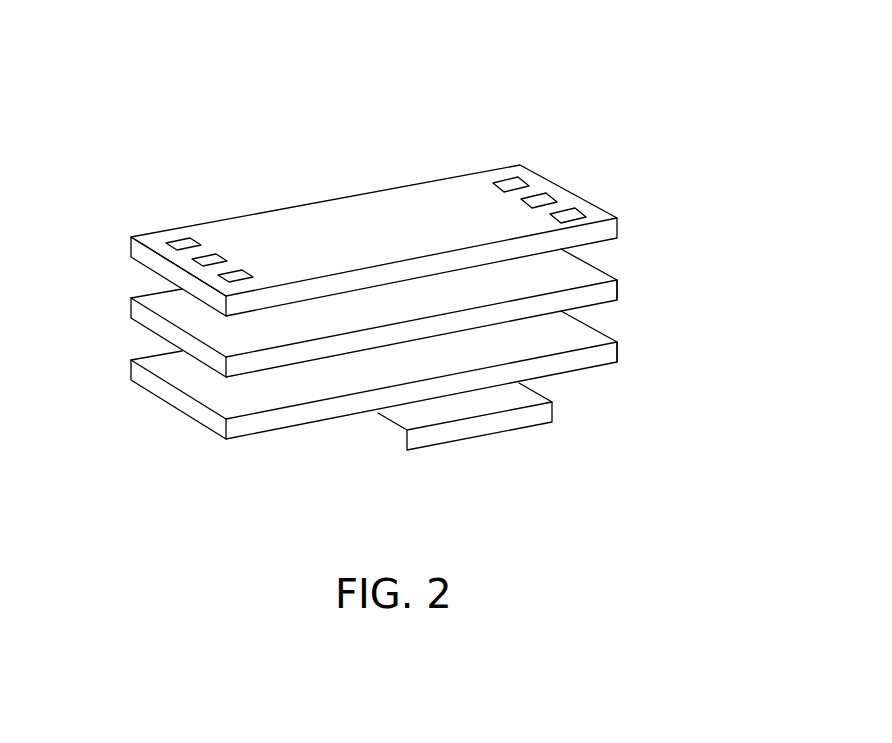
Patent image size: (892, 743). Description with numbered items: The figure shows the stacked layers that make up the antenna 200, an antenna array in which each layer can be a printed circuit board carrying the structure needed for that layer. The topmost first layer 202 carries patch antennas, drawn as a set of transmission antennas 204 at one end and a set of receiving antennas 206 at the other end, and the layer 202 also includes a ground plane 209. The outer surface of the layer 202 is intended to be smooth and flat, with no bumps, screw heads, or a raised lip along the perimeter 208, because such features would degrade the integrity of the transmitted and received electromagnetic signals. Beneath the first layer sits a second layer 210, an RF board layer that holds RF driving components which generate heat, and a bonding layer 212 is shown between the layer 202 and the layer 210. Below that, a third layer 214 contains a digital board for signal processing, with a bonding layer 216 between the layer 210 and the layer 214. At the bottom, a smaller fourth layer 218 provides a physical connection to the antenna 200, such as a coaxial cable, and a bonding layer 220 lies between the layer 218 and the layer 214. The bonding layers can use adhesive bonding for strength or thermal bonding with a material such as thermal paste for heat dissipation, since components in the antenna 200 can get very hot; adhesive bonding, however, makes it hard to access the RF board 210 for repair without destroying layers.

The antenna 200 is at (541, 66).
The first layer 202 is at (332, 217).
The set of transmission antennas 204 is at (180, 240).
The set of receiving antennas 206 is at (540, 200).
The perimeter 208 is at (162, 252).
The ground plane 209 is at (605, 232).
The second layer 210 is at (605, 290).
The bonding layer 212 is at (162, 305).
The third layer 214 is at (605, 355).
The bonding layer 216 is at (162, 367).
The fourth layer 218 is at (543, 417).
The bonding layer 220 is at (458, 413).